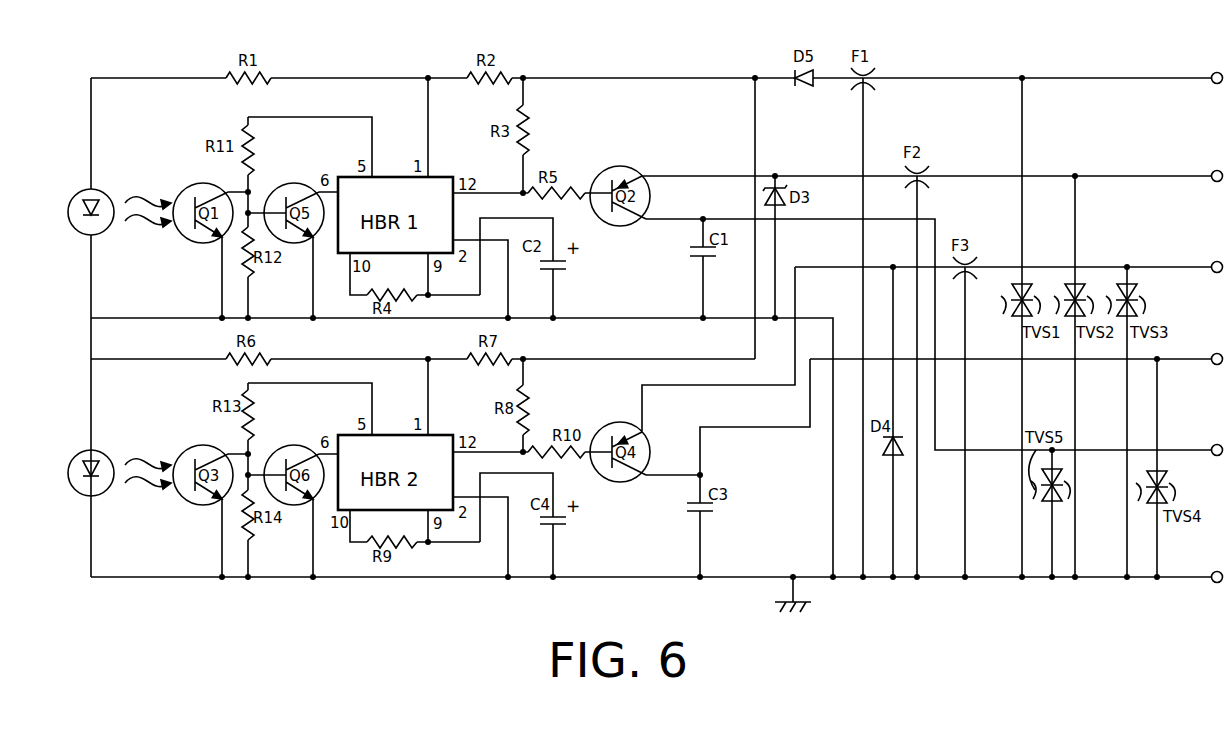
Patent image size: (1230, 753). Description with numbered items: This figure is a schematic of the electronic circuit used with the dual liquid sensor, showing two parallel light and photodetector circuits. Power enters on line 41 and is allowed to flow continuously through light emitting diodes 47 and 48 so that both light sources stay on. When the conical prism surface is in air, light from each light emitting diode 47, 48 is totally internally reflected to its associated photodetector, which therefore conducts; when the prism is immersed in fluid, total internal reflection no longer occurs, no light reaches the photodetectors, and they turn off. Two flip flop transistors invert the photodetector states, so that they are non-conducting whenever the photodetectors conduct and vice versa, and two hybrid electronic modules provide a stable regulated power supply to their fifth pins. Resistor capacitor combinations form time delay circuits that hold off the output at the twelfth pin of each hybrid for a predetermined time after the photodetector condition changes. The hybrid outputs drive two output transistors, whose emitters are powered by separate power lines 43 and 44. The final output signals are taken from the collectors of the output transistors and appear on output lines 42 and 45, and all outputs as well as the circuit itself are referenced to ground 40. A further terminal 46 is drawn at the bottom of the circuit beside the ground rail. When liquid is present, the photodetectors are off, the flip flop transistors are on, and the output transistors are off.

The ground 40 is at (811, 606).
The power line 41 is at (1213, 73).
The output line 42 is at (1213, 445).
The power line 43 is at (1213, 171).
The power line 44 is at (1213, 262).
The output line 45 is at (1213, 354).
The terminal 46 is at (1213, 572).
The light emitting diode 47 is at (98, 195).
The light emitting diode 48 is at (99, 457).